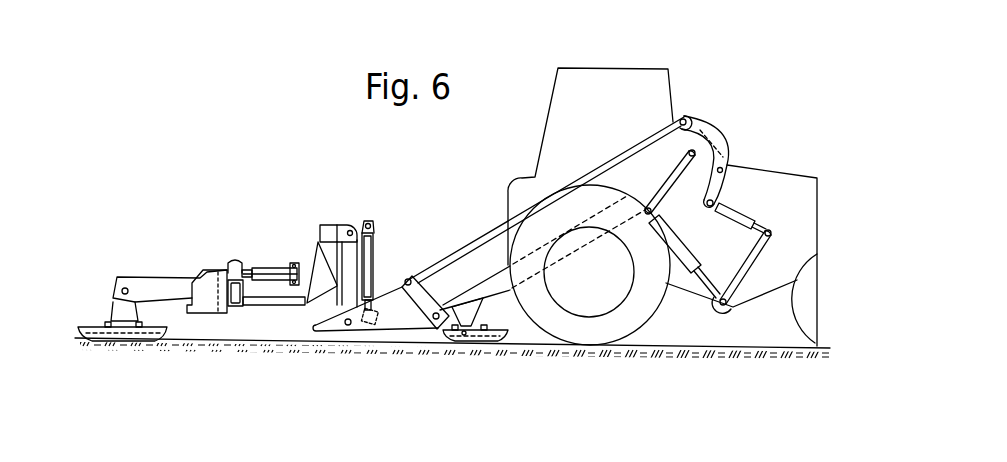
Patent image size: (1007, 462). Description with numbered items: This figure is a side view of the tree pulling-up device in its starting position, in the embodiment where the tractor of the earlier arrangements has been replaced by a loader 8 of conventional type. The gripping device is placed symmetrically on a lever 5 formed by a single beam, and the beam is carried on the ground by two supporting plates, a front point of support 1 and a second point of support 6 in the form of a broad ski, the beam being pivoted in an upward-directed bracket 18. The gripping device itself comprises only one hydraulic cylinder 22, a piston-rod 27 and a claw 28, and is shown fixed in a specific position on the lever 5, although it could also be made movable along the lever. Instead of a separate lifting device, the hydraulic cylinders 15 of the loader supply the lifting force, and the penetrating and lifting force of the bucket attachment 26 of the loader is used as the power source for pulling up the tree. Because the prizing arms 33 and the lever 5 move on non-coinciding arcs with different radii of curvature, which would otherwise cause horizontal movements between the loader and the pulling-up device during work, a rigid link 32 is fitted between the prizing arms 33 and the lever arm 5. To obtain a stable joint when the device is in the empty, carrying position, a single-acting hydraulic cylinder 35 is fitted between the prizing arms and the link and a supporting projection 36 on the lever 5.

The point of support 1 is at (488, 340).
The lever 5 is at (172, 279).
The point of support 6 is at (158, 333).
The loader 8 is at (620, 68).
The hydraulic cylinder 15 is at (740, 223).
The bracket 18 is at (476, 322).
The hydraulic cylinder 22 is at (276, 268).
The bucket attachment 26 is at (423, 300).
The piston-rod 27 is at (245, 266).
The claw 28 is at (205, 297).
The rigid link 32 is at (346, 298).
The prizing arm 33 is at (390, 324).
The single-acting hydraulic cylinder 35 is at (370, 262).
The supporting projection 36 is at (318, 238).